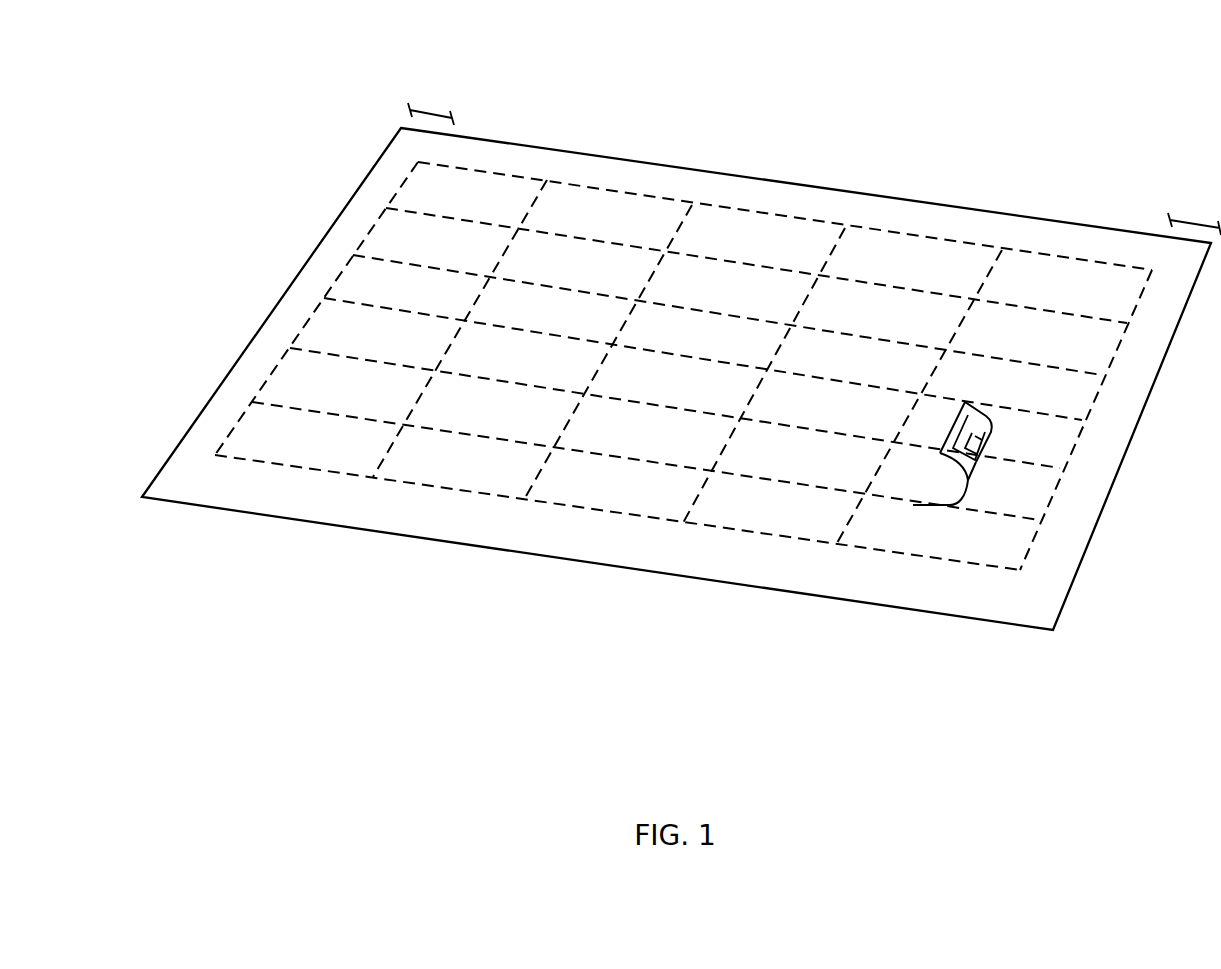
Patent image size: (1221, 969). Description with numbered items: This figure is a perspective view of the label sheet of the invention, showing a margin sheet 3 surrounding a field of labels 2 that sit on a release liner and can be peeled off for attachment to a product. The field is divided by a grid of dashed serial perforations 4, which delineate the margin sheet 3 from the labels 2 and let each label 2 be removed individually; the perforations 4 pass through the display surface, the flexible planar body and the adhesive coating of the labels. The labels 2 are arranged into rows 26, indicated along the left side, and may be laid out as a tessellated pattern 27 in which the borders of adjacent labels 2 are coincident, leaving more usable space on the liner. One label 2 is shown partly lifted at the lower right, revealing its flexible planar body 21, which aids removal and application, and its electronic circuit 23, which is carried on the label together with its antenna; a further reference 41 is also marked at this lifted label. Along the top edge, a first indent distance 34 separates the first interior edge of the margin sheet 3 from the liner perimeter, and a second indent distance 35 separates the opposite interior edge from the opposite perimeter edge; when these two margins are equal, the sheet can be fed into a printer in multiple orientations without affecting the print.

The labels 2 is at (981, 397).
The margin sheet 3 is at (615, 168).
The serial perforations 4 is at (413, 211).
The flexible planar body 21 is at (908, 460).
The electronic circuit 23 is at (980, 457).
The rows 26 is at (358, 222).
The tessellated pattern 27 is at (1162, 263).
The first indent distance 34 is at (425, 110).
The second indent distance 35 is at (1192, 218).
The tag attachment position 41 is at (870, 459).